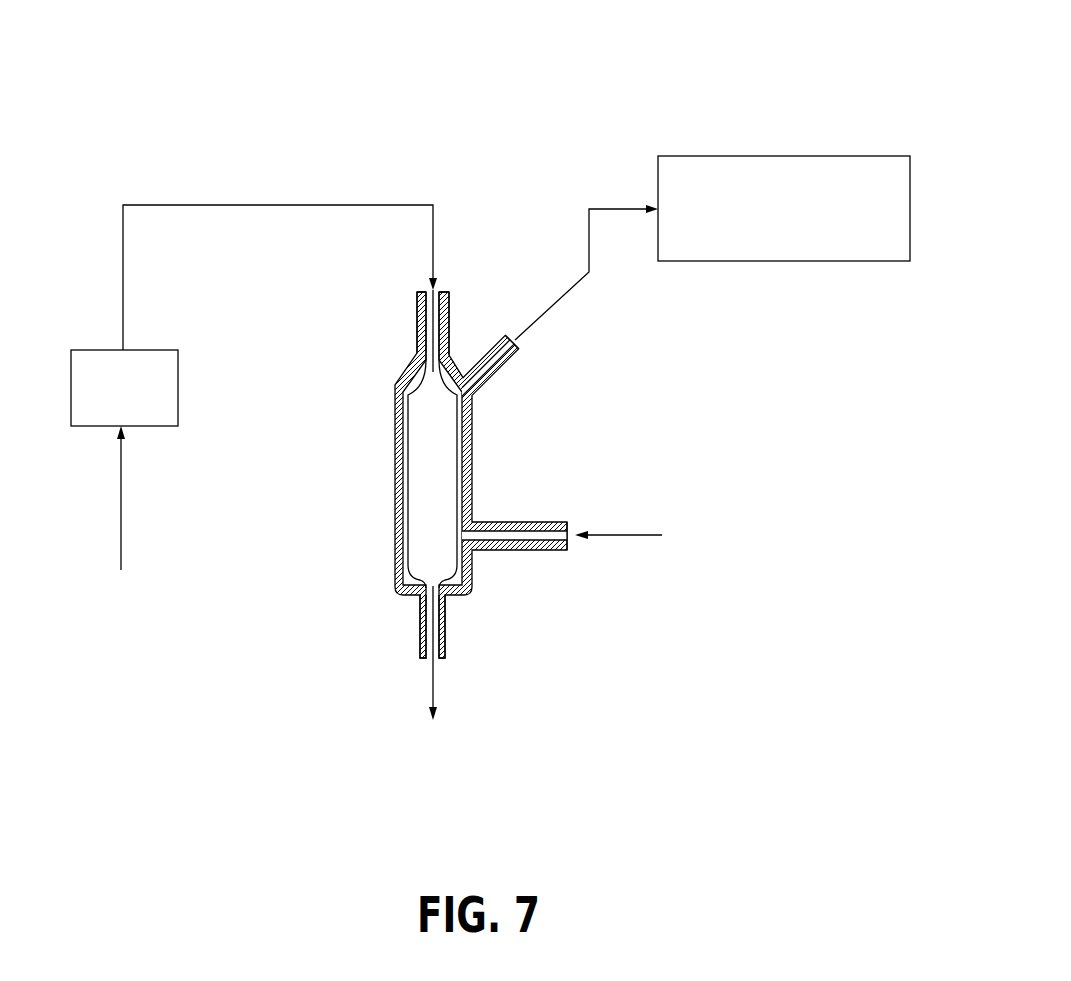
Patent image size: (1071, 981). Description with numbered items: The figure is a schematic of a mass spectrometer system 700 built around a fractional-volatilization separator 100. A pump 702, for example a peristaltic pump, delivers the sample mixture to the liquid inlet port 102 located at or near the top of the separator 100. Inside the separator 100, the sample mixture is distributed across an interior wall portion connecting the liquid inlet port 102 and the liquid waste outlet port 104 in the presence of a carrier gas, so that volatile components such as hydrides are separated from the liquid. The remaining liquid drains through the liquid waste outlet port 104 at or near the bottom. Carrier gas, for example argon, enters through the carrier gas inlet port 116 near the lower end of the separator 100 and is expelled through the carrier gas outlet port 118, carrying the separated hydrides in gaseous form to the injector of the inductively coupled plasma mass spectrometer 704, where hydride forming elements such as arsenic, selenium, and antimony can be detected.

The system 700 is at (684, 49).
The pump 702 is at (70, 358).
The inductively coupled plasma mass spectrometer 704 is at (750, 156).
The fractional-volatilization separator 100 is at (373, 452).
The liquid inlet port 102 is at (418, 317).
The liquid waste outlet port 104 is at (424, 631).
The carrier gas inlet port 116 is at (500, 535).
The carrier gas outlet port 118 is at (490, 366).